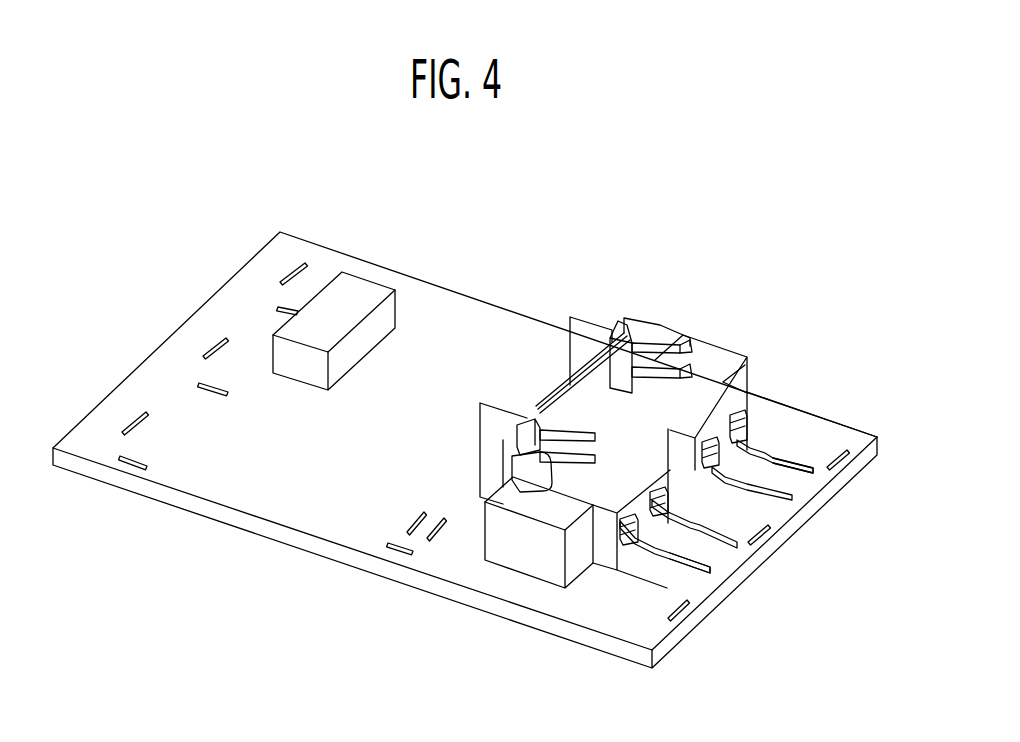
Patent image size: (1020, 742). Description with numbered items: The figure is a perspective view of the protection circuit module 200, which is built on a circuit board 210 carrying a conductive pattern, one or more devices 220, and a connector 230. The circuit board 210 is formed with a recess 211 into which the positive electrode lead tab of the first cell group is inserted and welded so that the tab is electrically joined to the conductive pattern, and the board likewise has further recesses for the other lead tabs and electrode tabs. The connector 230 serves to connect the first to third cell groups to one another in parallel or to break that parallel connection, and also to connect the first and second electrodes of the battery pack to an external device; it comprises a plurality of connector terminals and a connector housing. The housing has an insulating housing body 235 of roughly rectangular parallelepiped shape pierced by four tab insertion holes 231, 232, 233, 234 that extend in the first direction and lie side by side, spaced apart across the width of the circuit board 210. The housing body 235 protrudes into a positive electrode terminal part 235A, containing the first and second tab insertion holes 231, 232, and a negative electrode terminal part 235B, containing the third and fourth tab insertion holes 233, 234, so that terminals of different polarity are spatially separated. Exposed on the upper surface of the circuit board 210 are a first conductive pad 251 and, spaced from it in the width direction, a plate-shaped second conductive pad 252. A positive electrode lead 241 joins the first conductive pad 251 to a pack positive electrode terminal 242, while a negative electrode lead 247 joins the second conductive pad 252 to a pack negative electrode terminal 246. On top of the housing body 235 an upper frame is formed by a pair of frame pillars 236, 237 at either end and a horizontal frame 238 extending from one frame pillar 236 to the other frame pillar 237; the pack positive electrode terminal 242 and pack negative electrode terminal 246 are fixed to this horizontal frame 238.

The protection circuit module 200 is at (733, 219).
The circuit board 210 is at (433, 308).
The recess 211 is at (685, 611).
The device 220 is at (347, 285).
The connector 230 is at (777, 335).
The first tab insertion hole 231 is at (660, 535).
The second tab insertion hole 232 is at (700, 527).
The third tab insertion hole 233 is at (714, 445).
The fourth tab insertion hole 234 is at (738, 421).
The housing body 235 is at (537, 508).
The positive electrode terminal part 235A is at (613, 503).
The negative electrode terminal part 235B is at (735, 391).
The frame pillar 236 is at (523, 437).
The frame pillar 237 is at (635, 318).
The horizontal frame 238 is at (612, 348).
The positive electrode lead 241 is at (490, 438).
The pack positive electrode terminal 242 is at (583, 440).
The pack negative electrode terminal 246 is at (685, 362).
The negative electrode lead 247 is at (573, 318).
The first conductive pad 251 is at (717, 557).
The second conductive pad 252 is at (776, 477).